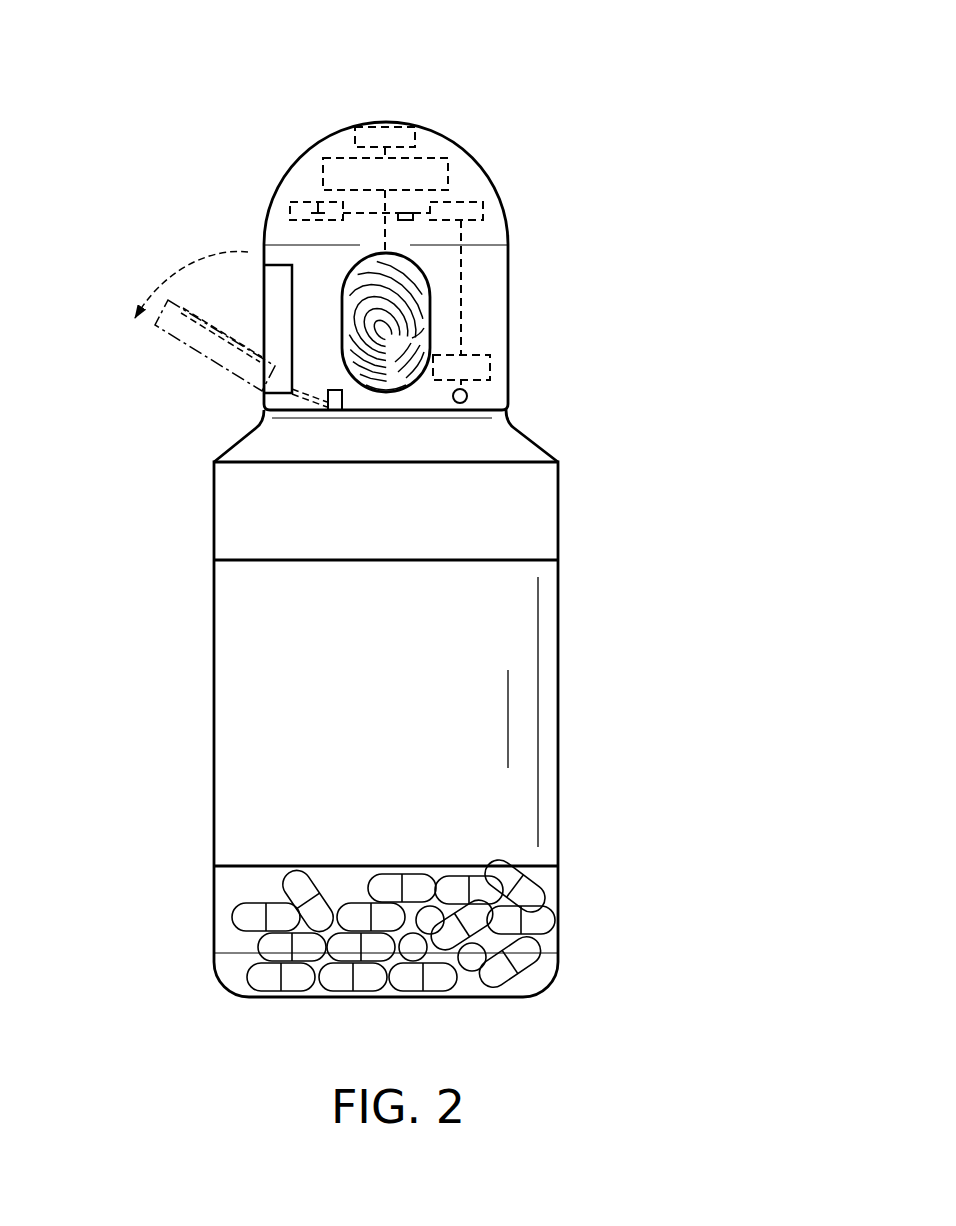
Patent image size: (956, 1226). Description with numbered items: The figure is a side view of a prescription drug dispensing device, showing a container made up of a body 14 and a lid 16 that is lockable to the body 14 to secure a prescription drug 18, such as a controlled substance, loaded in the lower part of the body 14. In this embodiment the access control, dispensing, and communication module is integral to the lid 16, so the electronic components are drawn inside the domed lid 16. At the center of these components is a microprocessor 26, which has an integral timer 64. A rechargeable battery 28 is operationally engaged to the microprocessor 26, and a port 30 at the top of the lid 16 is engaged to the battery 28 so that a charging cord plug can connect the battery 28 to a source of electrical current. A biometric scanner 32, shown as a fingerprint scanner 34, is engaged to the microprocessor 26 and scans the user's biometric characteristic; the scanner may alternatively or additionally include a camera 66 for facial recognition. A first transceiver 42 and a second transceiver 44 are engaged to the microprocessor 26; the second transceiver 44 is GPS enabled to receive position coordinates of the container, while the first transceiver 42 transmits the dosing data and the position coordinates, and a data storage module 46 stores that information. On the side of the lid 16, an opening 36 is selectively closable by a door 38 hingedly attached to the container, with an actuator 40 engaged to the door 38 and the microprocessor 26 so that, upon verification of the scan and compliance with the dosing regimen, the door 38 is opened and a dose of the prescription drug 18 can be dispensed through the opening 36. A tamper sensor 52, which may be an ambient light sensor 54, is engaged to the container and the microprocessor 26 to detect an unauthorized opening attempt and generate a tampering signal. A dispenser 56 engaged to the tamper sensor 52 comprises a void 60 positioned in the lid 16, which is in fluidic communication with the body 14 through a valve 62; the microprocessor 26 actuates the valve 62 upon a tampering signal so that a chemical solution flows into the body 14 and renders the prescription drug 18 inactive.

The body 14 is at (558, 692).
The lid 16 is at (508, 303).
The prescription drug 18 is at (428, 890).
The microprocessor 26 is at (463, 227).
The battery 28 is at (433, 176).
The port 30 is at (388, 136).
The biometric scanner 32 is at (392, 373).
The fingerprint scanner 34 is at (385, 380).
The opening 36 is at (260, 292).
The door 38 is at (268, 328).
The actuator 40 is at (292, 401).
The first transceiver 42 is at (468, 203).
The second transceiver 44 is at (296, 204).
The data storage module 46 is at (325, 209).
The tamper sensor 52 is at (325, 411).
The ambient light sensor 54 is at (336, 412).
The dispenser 56 is at (500, 351).
The void 60 is at (503, 382).
The valve 62 is at (467, 401).
The timer 64 is at (420, 222).
The camera 66 is at (388, 380).